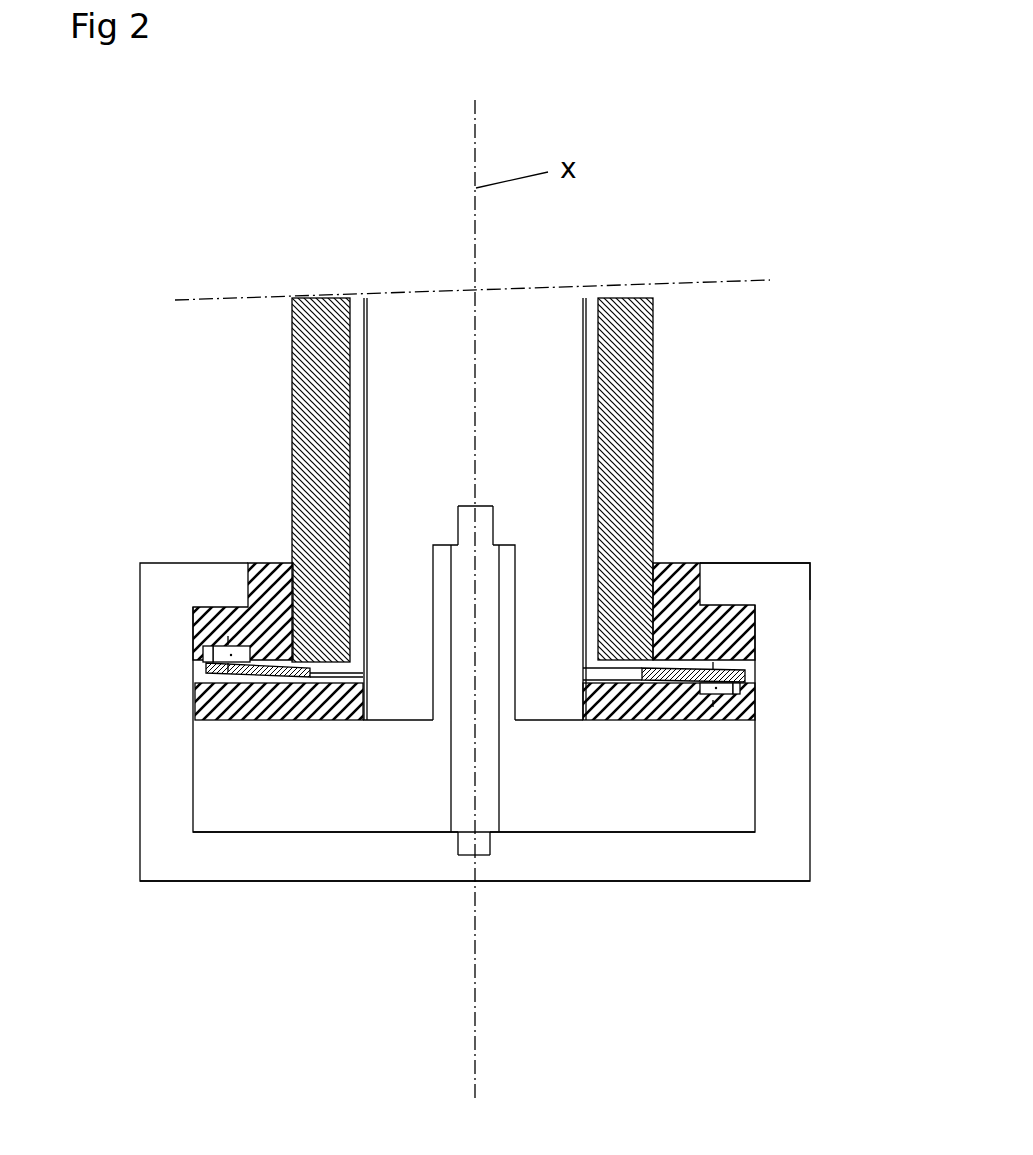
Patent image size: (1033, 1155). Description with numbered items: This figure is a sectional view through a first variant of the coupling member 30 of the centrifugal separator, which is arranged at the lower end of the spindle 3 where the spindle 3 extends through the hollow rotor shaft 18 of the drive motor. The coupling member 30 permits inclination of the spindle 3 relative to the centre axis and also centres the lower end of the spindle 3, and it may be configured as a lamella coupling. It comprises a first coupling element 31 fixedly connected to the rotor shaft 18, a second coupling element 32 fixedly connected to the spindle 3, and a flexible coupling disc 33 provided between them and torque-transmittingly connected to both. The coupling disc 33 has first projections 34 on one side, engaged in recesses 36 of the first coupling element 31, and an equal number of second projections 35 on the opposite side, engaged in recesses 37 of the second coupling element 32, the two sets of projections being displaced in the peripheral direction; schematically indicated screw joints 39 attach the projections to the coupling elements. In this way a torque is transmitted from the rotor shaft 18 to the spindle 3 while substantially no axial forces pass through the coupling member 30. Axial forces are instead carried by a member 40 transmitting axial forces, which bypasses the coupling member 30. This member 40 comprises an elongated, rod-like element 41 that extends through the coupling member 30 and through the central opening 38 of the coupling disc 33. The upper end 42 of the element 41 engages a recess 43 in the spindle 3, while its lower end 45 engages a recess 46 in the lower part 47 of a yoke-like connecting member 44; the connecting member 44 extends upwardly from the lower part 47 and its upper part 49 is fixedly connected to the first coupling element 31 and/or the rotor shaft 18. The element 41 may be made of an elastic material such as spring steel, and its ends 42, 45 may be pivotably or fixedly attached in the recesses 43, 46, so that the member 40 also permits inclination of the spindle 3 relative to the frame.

The spindle 3 is at (548, 350).
The rotor shaft 18 is at (628, 395).
The coupling member 30 is at (193, 675).
The first coupling element 31 is at (687, 570).
The second coupling element 32 is at (213, 707).
The coupling disc 33 is at (745, 668).
The first projections 34 is at (213, 653).
The second projections 35 is at (722, 687).
The recesses 36 is at (230, 642).
The recesses 37 is at (738, 692).
The central opening 38 is at (640, 672).
The screw joints 39 is at (230, 627).
The member transmitting axial forces 40 is at (138, 775).
The element 41 is at (488, 759).
The upper end 42 is at (463, 522).
The recess 43 is at (482, 508).
The connecting member 44 is at (782, 762).
The lower end 45 is at (480, 840).
The recess 46 is at (463, 845).
The lower part 47 is at (327, 863).
The upper part 49 is at (757, 578).